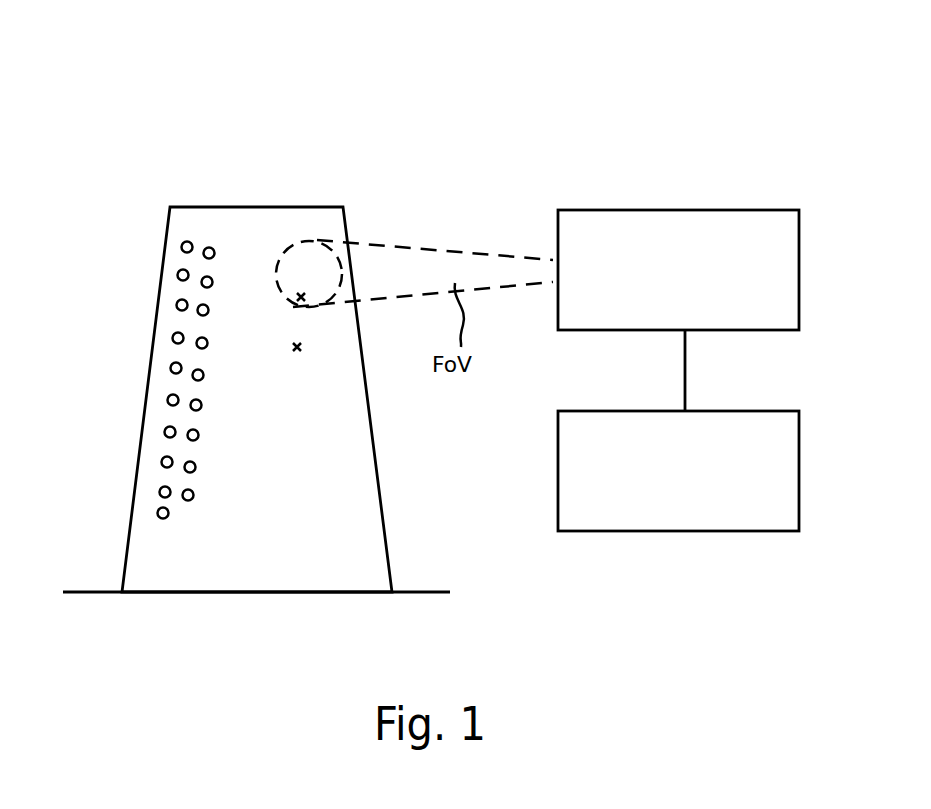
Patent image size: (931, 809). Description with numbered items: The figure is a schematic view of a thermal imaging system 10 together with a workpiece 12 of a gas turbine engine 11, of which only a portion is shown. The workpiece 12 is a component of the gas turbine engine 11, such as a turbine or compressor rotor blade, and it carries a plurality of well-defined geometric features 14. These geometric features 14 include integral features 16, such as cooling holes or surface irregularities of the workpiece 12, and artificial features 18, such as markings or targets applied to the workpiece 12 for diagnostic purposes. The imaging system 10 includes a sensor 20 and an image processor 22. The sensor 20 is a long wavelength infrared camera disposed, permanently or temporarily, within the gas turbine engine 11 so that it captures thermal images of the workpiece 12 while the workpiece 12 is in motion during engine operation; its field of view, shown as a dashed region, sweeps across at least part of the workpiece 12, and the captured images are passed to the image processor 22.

The thermal imaging system 10 is at (674, 97).
The gas turbine engine 11 is at (419, 580).
The workpiece 12 is at (262, 198).
The geometric features 14 is at (152, 474).
The integral features 16 is at (200, 309).
The artificial features 18 is at (292, 301).
The sensor 20 is at (667, 309).
The image processor 22 is at (691, 514).